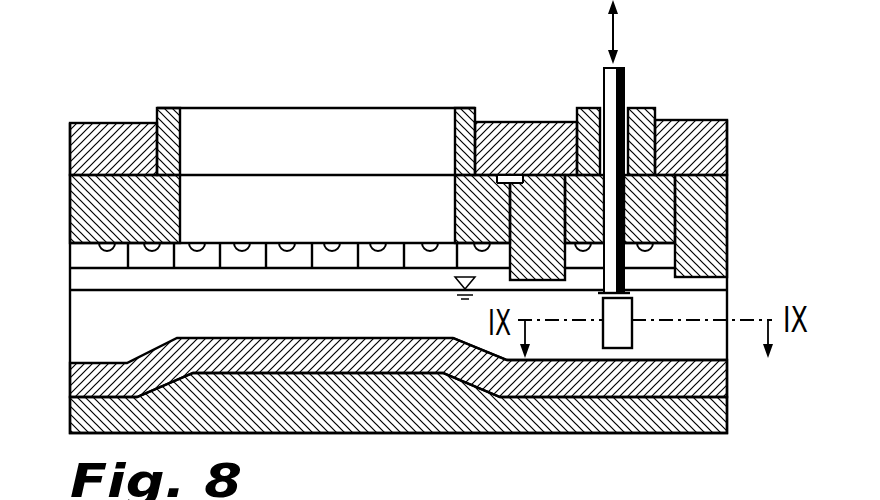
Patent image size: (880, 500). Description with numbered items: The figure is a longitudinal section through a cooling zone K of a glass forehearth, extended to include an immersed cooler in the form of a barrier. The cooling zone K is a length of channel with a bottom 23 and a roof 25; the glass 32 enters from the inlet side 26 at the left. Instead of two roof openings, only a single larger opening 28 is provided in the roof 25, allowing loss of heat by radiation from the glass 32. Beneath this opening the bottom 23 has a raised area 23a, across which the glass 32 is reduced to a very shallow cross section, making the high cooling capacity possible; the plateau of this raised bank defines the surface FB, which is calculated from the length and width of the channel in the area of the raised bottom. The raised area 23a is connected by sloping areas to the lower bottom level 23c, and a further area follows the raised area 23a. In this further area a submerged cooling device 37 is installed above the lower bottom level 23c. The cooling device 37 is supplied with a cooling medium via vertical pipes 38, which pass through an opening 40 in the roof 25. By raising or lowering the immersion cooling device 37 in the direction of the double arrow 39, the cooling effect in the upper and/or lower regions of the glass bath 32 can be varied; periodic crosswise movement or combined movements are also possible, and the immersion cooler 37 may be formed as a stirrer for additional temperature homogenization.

The bottom 23 is at (578, 410).
The raised area 23a is at (277, 334).
The lower bottom level 23c is at (697, 355).
The roof 25 is at (95, 211).
The inlet side 26 is at (66, 332).
The opening 28 is at (309, 132).
The glass 32 is at (390, 329).
The submerged cooling device 37 is at (598, 335).
The vertical pipes 38 is at (622, 92).
The double arrow 39 is at (616, 30).
The opening 40 is at (601, 97).
The cooling zone K is at (748, 98).
The surface FB is at (330, 338).